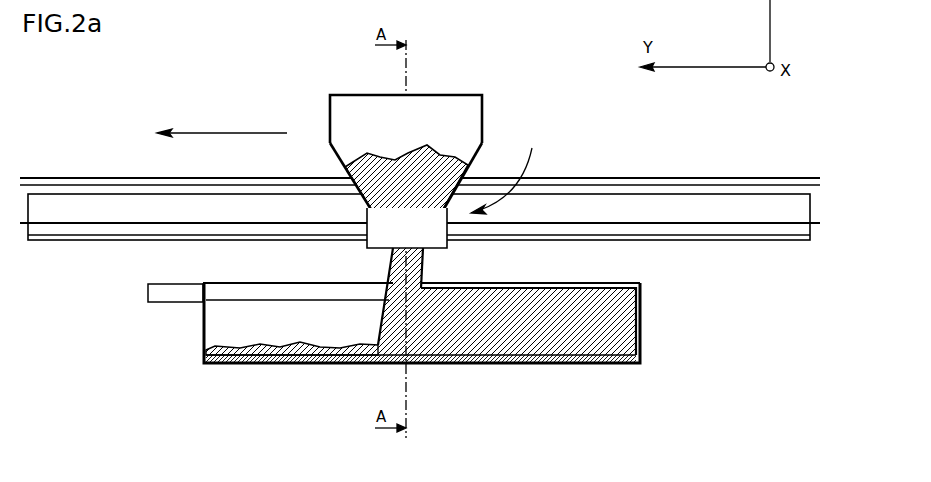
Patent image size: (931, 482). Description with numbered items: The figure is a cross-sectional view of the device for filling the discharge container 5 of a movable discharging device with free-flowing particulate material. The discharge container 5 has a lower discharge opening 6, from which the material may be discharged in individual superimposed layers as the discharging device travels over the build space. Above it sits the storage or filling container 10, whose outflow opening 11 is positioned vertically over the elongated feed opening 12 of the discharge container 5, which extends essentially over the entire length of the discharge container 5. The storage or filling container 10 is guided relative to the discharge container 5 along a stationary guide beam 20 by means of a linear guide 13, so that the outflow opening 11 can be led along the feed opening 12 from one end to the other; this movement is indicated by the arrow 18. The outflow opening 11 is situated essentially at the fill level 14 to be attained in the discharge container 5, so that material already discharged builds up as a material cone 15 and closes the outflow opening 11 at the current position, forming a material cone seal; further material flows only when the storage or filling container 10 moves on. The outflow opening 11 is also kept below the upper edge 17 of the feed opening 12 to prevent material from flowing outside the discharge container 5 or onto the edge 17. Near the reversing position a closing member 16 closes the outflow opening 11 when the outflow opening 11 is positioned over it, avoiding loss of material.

The discharge container 5 is at (614, 365).
The lower discharge opening 6 is at (490, 365).
The storage or filling container 10 is at (468, 102).
The outflow opening 11 is at (420, 272).
The feed opening 12 is at (518, 278).
The linear guide 13 is at (510, 170).
The fill level 14 is at (616, 303).
The material cone 15 is at (392, 270).
The closing member 16 is at (175, 298).
The upper edge 17 is at (250, 283).
The arrow 18 is at (226, 133).
The guide beam 20 is at (90, 213).